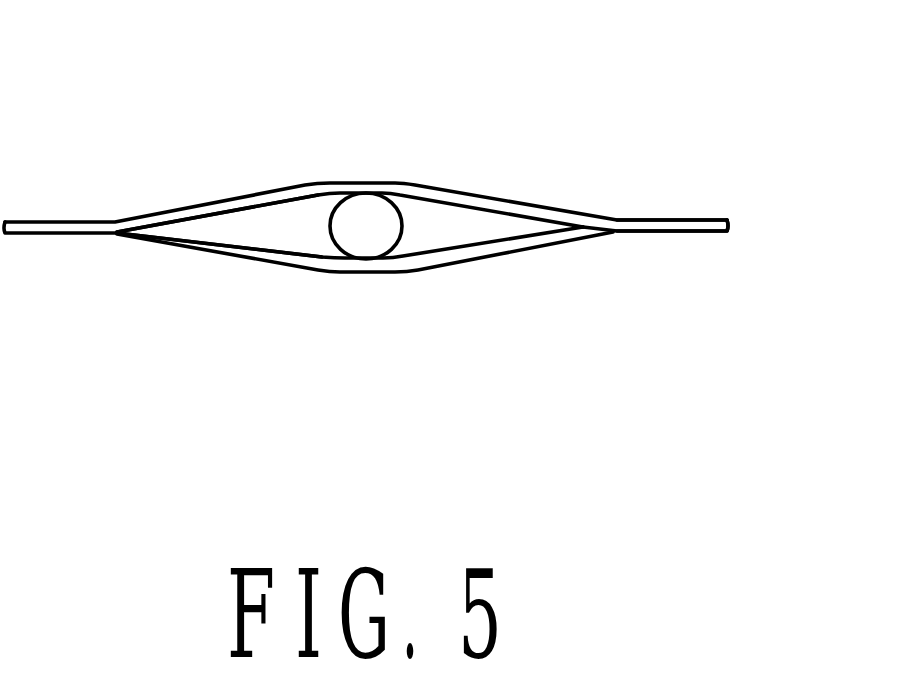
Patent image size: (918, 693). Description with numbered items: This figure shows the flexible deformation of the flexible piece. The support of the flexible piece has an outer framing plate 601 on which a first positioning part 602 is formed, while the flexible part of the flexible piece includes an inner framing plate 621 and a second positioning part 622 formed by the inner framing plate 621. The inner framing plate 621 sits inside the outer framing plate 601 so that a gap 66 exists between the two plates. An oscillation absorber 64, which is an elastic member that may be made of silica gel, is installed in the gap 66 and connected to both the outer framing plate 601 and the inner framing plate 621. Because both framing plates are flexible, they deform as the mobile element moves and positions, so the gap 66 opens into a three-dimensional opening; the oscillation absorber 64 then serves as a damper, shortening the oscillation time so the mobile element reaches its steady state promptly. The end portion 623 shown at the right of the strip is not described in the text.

The second positioning part 622 is at (364, 183).
The inner framing plate 621 is at (476, 193).
The right end tab of folded strip 623 is at (703, 218).
The gap 66 is at (260, 230).
The oscillation absorber 64 is at (357, 228).
The first positioning part 602 is at (365, 268).
The outer framing plate 601 is at (477, 257).